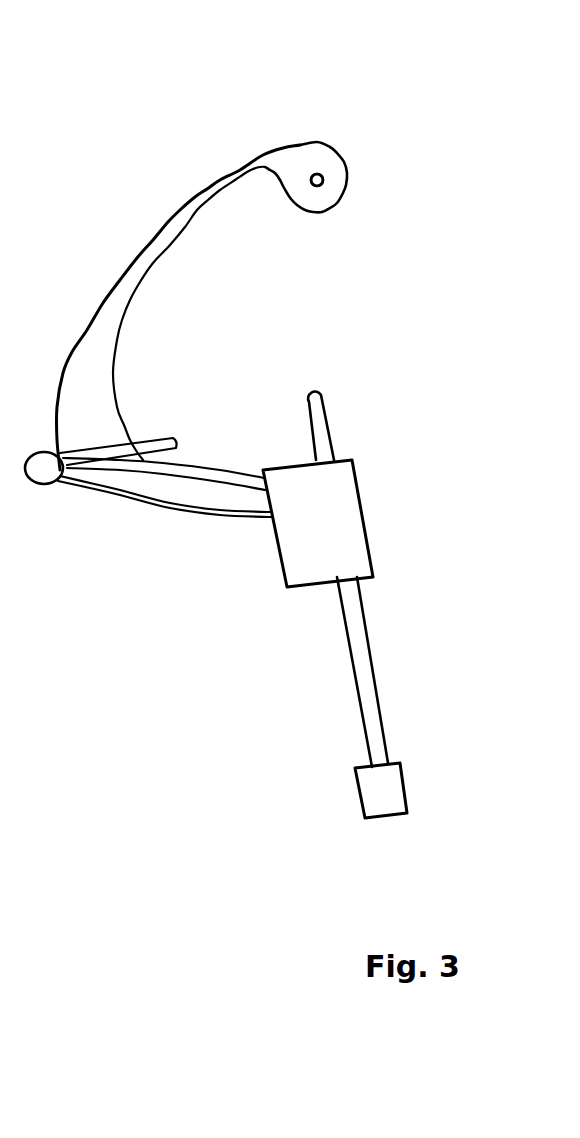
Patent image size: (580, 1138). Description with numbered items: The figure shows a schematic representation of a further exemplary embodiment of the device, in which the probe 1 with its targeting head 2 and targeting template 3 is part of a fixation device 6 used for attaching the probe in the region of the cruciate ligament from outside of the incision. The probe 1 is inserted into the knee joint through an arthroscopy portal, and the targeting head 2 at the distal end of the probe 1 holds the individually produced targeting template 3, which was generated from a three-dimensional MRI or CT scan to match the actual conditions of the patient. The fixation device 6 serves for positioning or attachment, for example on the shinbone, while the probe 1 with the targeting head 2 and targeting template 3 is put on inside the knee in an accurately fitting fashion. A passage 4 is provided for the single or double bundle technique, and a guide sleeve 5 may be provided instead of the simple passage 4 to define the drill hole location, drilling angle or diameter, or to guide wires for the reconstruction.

The probe 1 is at (157, 263).
The targeting head 2 is at (285, 135).
The targeting template 3 is at (318, 142).
The passage 4 is at (325, 181).
The guide sleeve 5 is at (317, 180).
The fixation device 6 is at (168, 552).